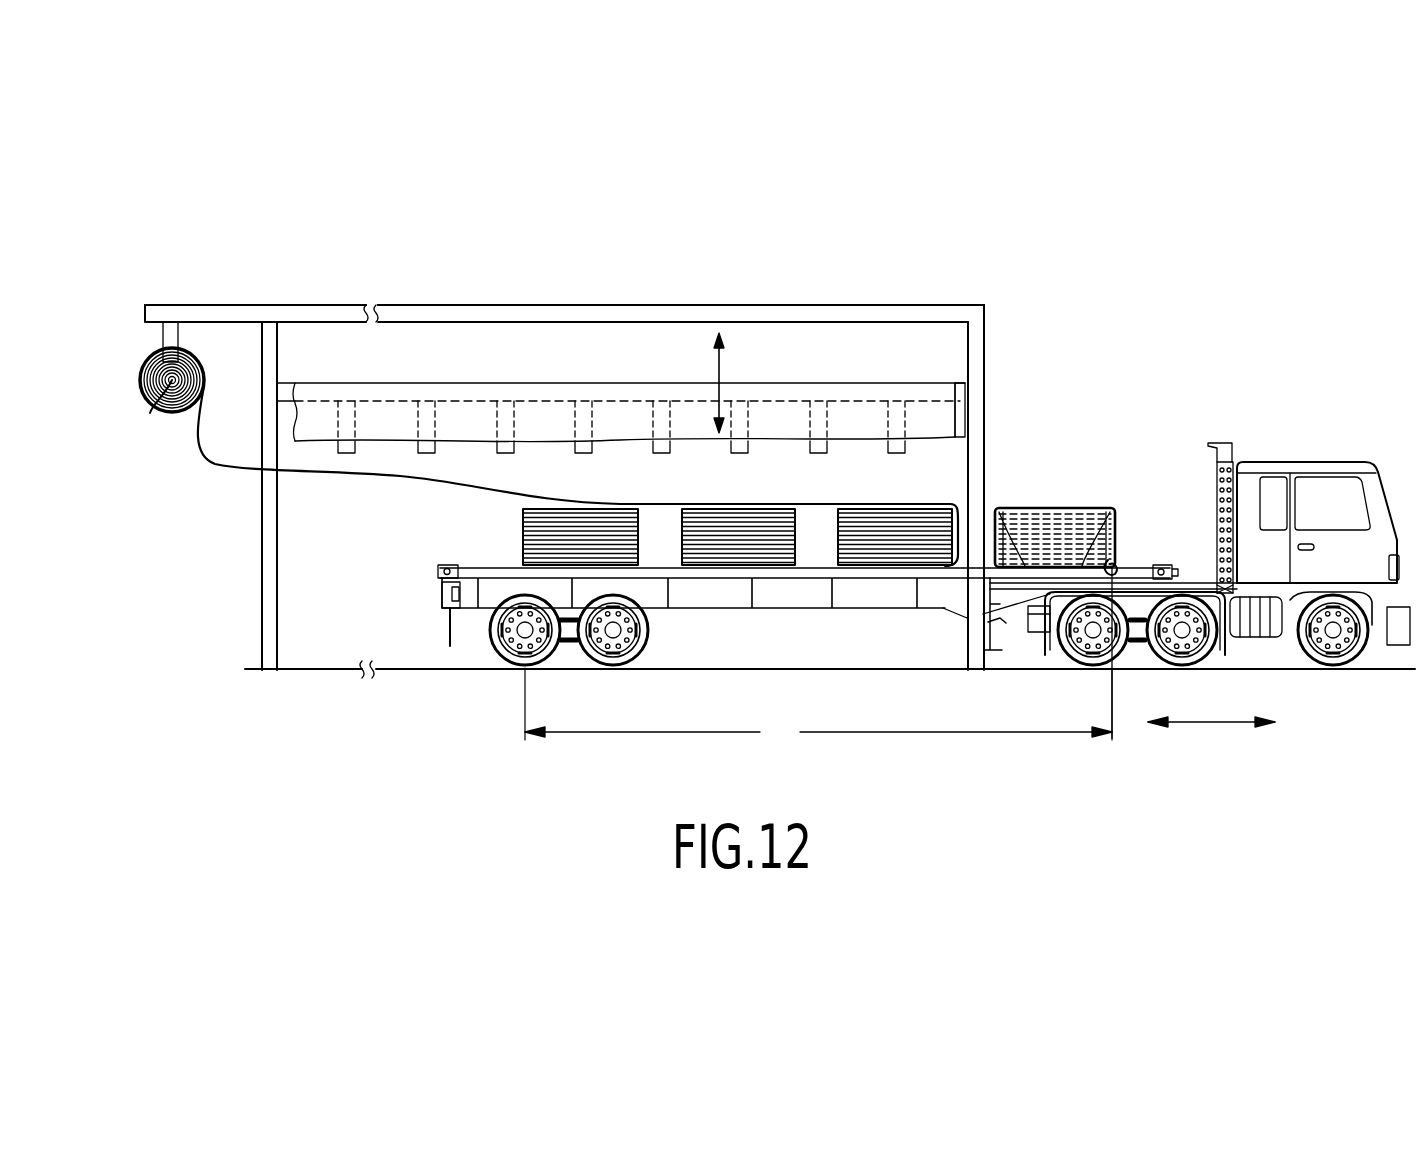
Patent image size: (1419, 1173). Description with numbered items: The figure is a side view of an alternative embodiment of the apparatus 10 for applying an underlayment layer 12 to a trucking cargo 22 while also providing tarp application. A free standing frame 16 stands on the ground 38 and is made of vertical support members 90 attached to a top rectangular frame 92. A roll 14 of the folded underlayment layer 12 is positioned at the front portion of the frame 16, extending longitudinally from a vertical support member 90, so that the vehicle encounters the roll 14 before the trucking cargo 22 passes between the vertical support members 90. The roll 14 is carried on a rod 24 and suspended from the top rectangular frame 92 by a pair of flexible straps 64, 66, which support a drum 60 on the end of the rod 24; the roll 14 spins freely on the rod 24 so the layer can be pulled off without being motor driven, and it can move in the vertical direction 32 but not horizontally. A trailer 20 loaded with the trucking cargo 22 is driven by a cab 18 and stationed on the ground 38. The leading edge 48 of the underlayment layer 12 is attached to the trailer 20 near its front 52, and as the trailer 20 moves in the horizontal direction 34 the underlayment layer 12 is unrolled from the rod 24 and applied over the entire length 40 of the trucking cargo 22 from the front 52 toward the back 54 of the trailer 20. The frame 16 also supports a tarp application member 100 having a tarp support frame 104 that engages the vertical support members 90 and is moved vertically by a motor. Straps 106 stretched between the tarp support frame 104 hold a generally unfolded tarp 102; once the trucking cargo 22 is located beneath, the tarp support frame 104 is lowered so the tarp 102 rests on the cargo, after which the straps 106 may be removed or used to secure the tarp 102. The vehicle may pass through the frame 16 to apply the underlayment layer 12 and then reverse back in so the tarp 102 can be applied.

The apparatus 10 is at (770, 250).
The underlayment layer 12 is at (222, 468).
The roll 14 is at (215, 365).
The frame 16 is at (515, 301).
The cab 18 is at (1318, 458).
The trailer 20 is at (778, 618).
The trucking cargo 22 is at (570, 520).
The rod 24 is at (158, 410).
The vertical direction 32 is at (716, 372).
The horizontal direction 34 is at (1200, 724).
The ground 38 is at (325, 668).
The length 40 is at (818, 707).
The leading edge 48 is at (1118, 562).
The front 52 is at (1165, 564).
The back 54 is at (437, 563).
The drum 60 is at (175, 380).
The strap 64 is at (248, 311).
The strap 66 is at (180, 340).
The vertical support member 90 is at (277, 530).
The top rectangular frame 92 is at (655, 312).
The tarp application member 100 is at (855, 352).
The tarp 102 is at (870, 442).
The tarp support frame 104 is at (962, 378).
The straps 106 is at (583, 452).